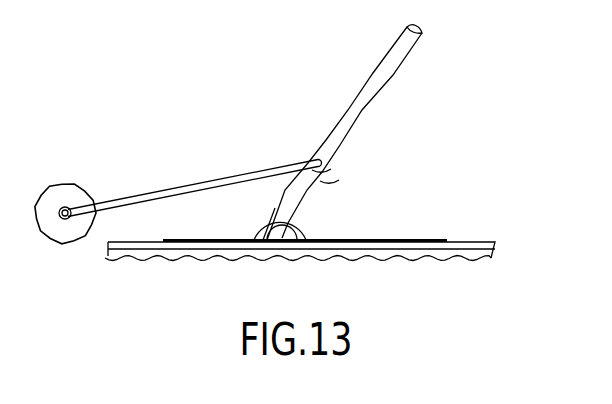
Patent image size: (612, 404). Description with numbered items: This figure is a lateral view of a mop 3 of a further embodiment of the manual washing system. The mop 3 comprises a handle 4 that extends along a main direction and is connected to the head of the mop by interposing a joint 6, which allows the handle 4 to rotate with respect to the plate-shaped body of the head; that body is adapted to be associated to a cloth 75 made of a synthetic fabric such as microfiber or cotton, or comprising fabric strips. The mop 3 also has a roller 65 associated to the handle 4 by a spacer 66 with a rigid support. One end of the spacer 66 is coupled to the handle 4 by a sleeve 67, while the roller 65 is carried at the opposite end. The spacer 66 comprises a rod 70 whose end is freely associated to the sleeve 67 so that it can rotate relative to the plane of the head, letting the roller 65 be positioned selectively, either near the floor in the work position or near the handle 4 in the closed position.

The mop 3 is at (278, 92).
The handle 4 is at (390, 77).
The joint 6 is at (320, 217).
The roller 65 is at (53, 229).
The spacer 66 is at (156, 168).
The sleeve 67 is at (304, 148).
The rod 70 is at (133, 207).
The cloth 75 is at (437, 258).